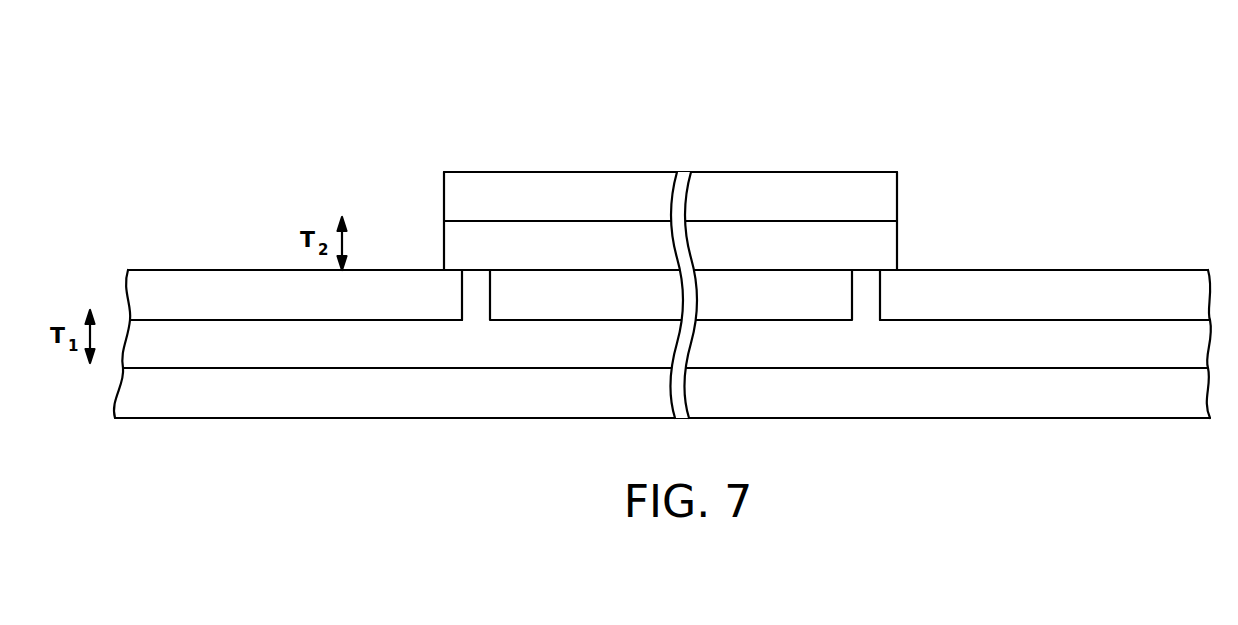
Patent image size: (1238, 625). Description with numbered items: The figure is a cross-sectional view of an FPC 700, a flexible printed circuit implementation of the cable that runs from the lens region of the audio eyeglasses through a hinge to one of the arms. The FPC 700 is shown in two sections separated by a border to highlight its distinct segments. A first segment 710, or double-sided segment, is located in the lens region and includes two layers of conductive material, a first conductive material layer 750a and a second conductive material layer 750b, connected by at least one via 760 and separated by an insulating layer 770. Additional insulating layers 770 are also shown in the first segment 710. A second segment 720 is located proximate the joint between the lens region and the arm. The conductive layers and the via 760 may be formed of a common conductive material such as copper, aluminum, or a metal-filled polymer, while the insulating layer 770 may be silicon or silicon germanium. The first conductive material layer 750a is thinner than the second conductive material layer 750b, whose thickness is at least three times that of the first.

The FPC 700 is at (140, 92).
The first segment 710 is at (585, 118).
The second segment 720 is at (216, 236).
The first conductive material layer 750a is at (538, 355).
The second conductive material layer 750b is at (538, 255).
The via 760 is at (451, 282).
The insulating layer 770 is at (545, 207).